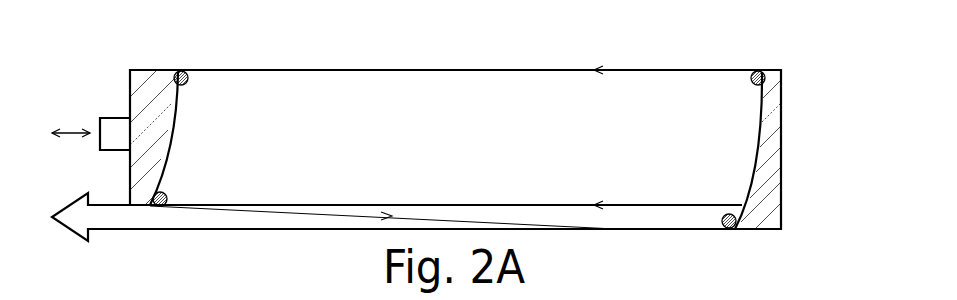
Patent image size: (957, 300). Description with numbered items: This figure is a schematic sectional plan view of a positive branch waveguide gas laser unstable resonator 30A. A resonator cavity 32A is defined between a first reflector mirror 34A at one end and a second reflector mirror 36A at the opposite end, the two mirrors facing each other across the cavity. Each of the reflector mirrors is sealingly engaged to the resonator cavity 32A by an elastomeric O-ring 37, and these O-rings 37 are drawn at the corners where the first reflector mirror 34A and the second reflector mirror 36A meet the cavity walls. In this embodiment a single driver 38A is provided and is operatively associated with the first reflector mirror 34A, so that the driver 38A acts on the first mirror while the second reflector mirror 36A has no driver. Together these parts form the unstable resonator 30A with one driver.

The positive branch waveguide gas laser unstable resonator 30A is at (658, 60).
The resonator cavity 32A is at (685, 135).
The first reflector mirror 34A is at (147, 162).
The second reflector mirror 36A is at (770, 163).
The elastomeric O-ring 37 is at (181, 71).
The driver 38A is at (115, 133).